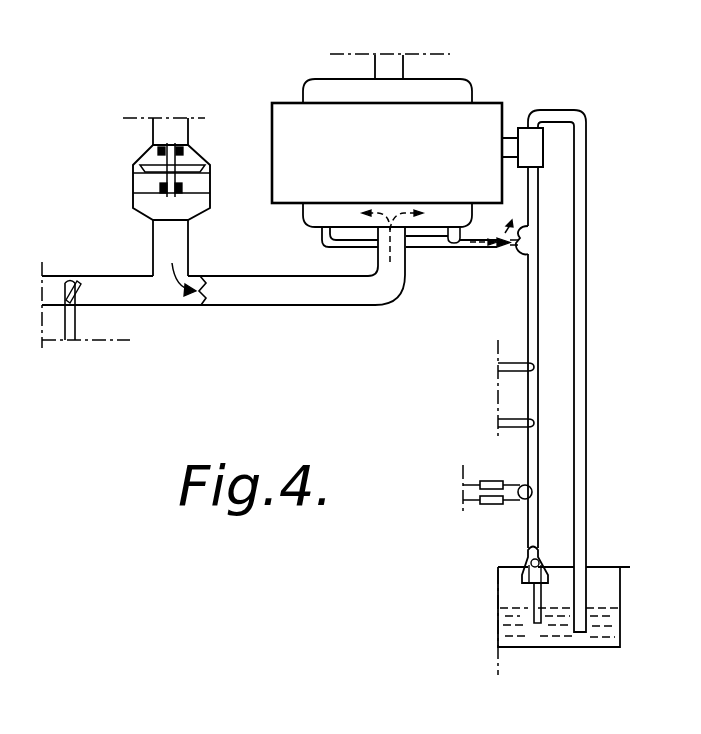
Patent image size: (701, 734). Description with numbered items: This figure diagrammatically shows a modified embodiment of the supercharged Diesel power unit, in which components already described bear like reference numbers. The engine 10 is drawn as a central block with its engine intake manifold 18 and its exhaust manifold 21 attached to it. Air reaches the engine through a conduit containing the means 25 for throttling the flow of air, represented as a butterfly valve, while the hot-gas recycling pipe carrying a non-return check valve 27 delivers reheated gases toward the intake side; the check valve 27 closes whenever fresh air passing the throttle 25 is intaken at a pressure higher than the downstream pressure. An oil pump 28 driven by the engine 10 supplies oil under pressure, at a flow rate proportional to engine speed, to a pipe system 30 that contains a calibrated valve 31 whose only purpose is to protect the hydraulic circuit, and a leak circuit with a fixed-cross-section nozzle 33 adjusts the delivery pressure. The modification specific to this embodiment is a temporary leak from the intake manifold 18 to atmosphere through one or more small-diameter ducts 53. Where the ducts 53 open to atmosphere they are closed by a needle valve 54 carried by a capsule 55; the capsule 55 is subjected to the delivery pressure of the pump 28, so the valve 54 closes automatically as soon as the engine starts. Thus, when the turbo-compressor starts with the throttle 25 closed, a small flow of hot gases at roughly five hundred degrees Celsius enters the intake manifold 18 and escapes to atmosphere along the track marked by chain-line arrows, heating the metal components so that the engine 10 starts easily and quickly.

The engine 10 is at (485, 102).
The engine intake manifold 18 is at (435, 218).
The exhaust manifold 21 is at (443, 88).
The means for throttling the flow of air 25 is at (78, 306).
The non-return check valve 27 is at (202, 153).
The oil pump 28 is at (533, 140).
The pipe system 30 is at (532, 182).
The calibrated valve 31 is at (525, 560).
The nozzle 33 is at (488, 480).
The small-diameter ducts 53 is at (452, 250).
The needle valve 54 is at (510, 250).
The capsule 55 is at (522, 252).